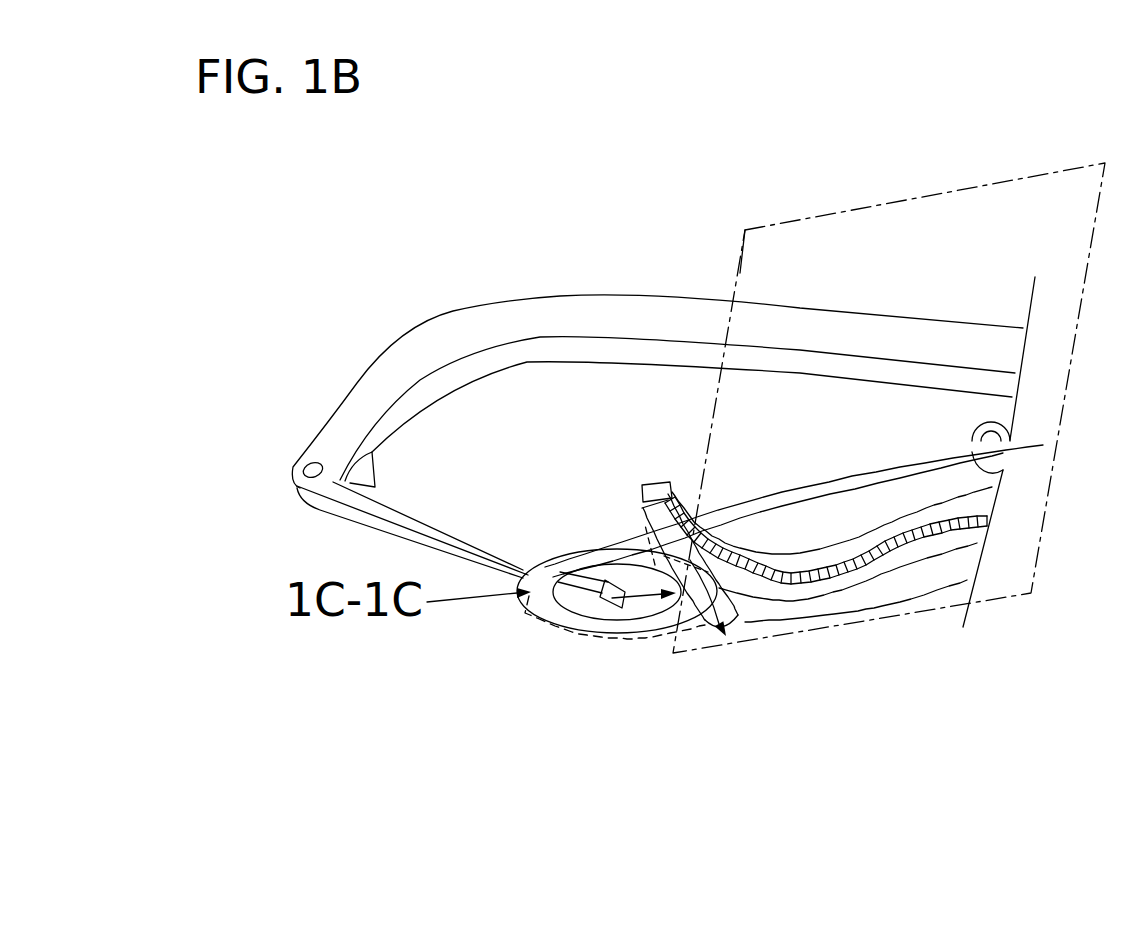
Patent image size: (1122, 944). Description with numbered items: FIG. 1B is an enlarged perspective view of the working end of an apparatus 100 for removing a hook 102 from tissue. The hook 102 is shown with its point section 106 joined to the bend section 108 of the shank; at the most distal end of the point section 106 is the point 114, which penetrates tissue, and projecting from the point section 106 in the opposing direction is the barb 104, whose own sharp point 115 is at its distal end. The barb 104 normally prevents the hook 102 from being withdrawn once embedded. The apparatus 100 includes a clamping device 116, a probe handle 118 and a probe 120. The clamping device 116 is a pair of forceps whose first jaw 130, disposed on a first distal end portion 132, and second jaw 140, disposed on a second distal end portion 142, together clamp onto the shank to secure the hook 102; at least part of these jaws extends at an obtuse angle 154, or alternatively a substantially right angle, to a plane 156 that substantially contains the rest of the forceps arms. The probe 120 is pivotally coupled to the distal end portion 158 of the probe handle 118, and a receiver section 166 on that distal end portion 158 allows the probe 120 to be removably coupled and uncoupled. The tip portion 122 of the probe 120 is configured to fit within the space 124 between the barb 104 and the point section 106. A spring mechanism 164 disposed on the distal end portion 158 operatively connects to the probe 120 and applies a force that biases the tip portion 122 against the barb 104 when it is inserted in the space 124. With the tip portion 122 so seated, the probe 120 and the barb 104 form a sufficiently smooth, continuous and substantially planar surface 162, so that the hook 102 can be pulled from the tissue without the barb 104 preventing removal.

The apparatus 100 is at (558, 206).
The hook 102 is at (750, 476).
The barb 104 is at (634, 590).
The point section 106 is at (655, 565).
The bend section 108 is at (528, 616).
The point 114 is at (770, 618).
The point of the barb 115 is at (598, 596).
The clamping device 116 is at (940, 635).
The probe handle 118 is at (424, 248).
The probe 120 is at (518, 610).
The tip portion 122 is at (614, 608).
The space 124 is at (603, 604).
The first jaw 130 is at (765, 620).
The first distal end portion 132 is at (895, 600).
The second jaw 140 is at (655, 483).
The second distal end portion 142 is at (913, 516).
The obtuse angle 154 is at (665, 527).
The plane 156 is at (863, 208).
The distal end portion 158 is at (422, 323).
The substantially planar surface 162 is at (603, 565).
The spring mechanism 164 is at (377, 530).
The receiver section 166 is at (300, 407).